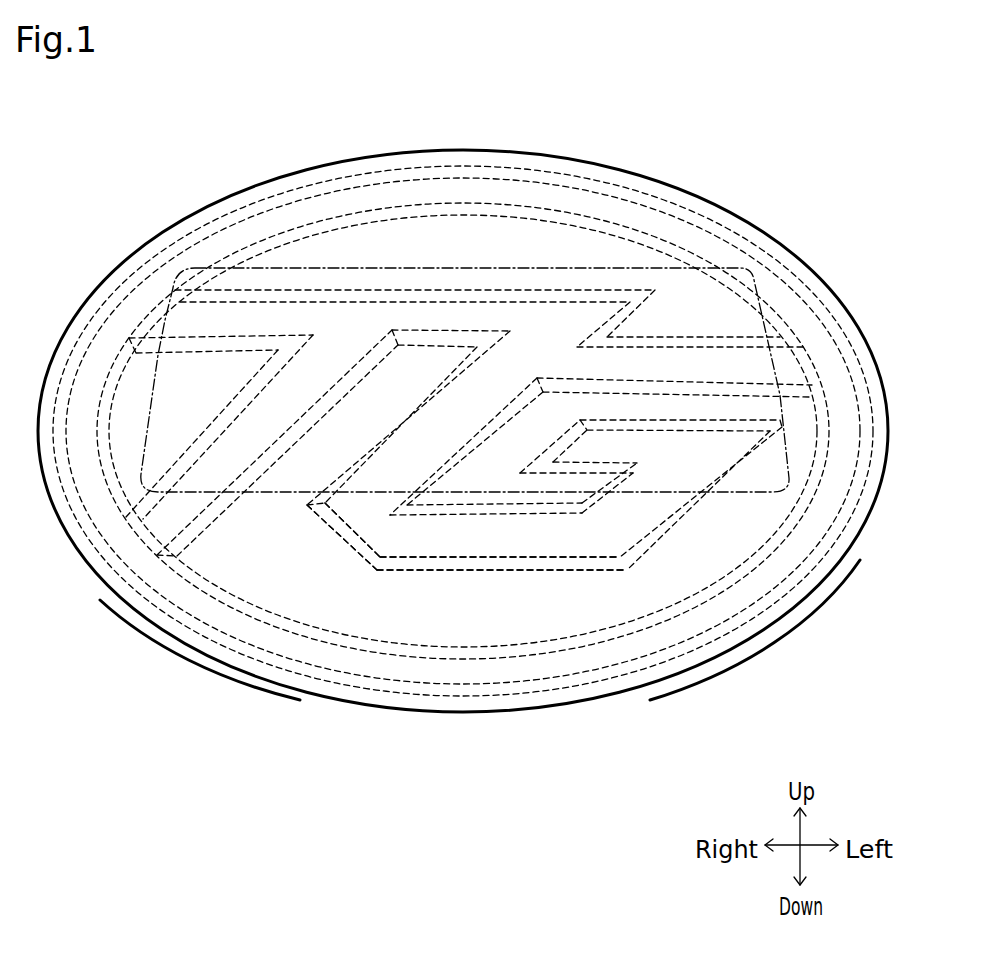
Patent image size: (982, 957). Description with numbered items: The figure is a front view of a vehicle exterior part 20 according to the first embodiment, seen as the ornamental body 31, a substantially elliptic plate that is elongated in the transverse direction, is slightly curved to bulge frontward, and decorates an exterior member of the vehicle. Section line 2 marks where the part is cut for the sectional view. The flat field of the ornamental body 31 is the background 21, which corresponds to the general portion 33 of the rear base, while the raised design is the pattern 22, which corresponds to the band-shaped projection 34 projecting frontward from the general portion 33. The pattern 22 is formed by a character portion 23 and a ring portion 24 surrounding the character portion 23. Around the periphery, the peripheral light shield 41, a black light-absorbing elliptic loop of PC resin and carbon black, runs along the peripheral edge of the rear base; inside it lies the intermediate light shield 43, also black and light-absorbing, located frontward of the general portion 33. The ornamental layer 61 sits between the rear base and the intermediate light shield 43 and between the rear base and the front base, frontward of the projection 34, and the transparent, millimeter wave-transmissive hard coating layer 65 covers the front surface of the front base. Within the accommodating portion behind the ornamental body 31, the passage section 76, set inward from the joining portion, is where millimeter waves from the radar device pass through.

The section line II-II 2 is at (463, 128).
The vehicle exterior part 20 is at (178, 167).
The ornamental body 31 is at (463, 402).
The peripheral light shield 41 is at (150, 623).
The ornamental layer 61 is at (762, 630).
The hard coating layer 65 is at (591, 205).
The pattern 22 is at (463, 482).
The character portion 23 is at (613, 573).
The ring portion 24 is at (578, 688).
The passage section 76 is at (788, 463).
The background 21 is at (463, 475).
The general portion 33 is at (290, 600).
The intermediate light shield 43 is at (463, 431).
The projection 34 is at (420, 573).